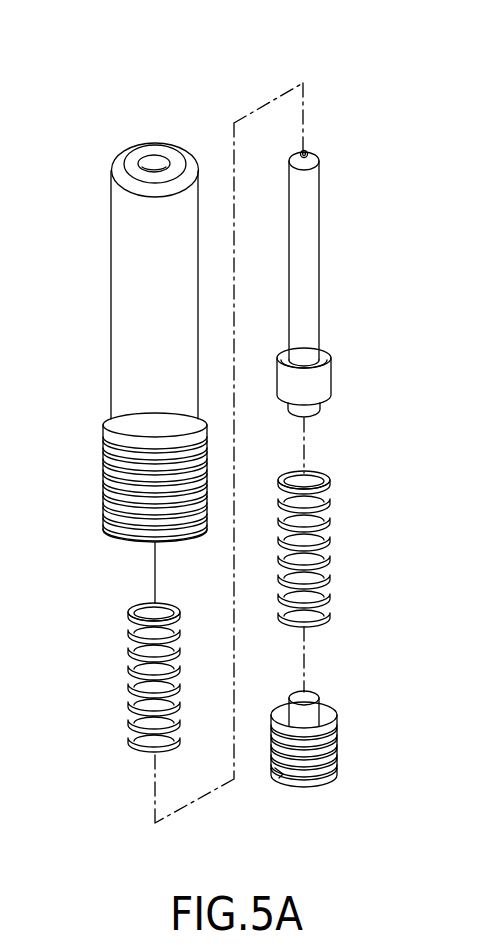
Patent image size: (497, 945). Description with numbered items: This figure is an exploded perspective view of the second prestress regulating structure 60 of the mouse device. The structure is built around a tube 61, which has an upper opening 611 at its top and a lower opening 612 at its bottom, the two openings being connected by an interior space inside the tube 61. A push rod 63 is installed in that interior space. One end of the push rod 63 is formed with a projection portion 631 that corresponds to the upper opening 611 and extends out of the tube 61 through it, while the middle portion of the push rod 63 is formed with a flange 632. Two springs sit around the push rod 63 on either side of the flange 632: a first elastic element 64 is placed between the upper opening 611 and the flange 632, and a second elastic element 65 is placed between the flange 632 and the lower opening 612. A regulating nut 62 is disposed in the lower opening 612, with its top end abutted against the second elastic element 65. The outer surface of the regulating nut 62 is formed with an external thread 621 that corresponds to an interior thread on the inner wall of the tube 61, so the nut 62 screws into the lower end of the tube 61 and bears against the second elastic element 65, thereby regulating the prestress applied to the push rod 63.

The pressing assembly 60 is at (110, 44).
The tube 61 is at (130, 313).
The upper opening 611 is at (155, 162).
The lower opening 612 is at (131, 542).
The regulating nut 62 is at (322, 712).
The external thread 621 is at (332, 755).
The push rod 63 is at (307, 263).
The projection portion 631 is at (307, 153).
The flange 632 is at (320, 384).
The first elastic element 64 is at (133, 677).
The second elastic element 65 is at (325, 545).